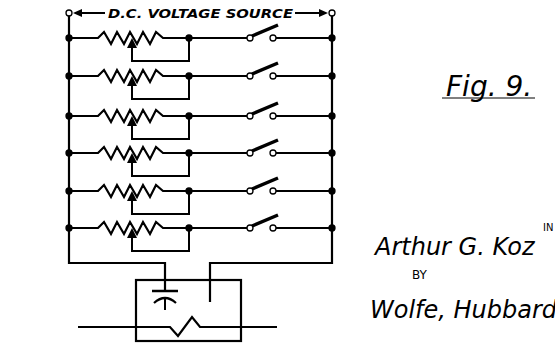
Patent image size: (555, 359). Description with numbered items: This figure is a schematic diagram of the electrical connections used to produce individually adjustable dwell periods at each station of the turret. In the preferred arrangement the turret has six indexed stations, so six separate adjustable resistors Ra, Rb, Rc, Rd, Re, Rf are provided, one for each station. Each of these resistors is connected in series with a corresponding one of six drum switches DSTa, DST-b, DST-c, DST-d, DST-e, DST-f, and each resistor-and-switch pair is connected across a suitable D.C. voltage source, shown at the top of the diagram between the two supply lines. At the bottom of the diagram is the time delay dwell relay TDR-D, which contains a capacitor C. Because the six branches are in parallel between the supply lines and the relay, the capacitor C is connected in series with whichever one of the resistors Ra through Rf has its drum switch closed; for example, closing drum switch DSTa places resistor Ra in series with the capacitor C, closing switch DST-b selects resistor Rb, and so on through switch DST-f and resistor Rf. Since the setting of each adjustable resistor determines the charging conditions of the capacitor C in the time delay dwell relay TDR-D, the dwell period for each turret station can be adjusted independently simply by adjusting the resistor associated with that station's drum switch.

The adjustable resistor Ra is at (100, 40).
The adjustable resistor Rb is at (103, 78).
The adjustable resistor Rc is at (103, 118).
The adjustable resistor Rd is at (104, 155).
The adjustable resistor Re is at (108, 193).
The adjustable resistor Rf is at (108, 230).
The drum switch DSTa is at (278, 35).
The drum switch DST-b is at (278, 73).
The drum switch DST-c is at (278, 113).
The drum switch DST-d is at (278, 150).
The drum switch DST-e is at (278, 188).
The drum switch DST-f is at (278, 226).
The capacitor C is at (150, 294).
The time delay dwell relay TDR-D is at (273, 300).